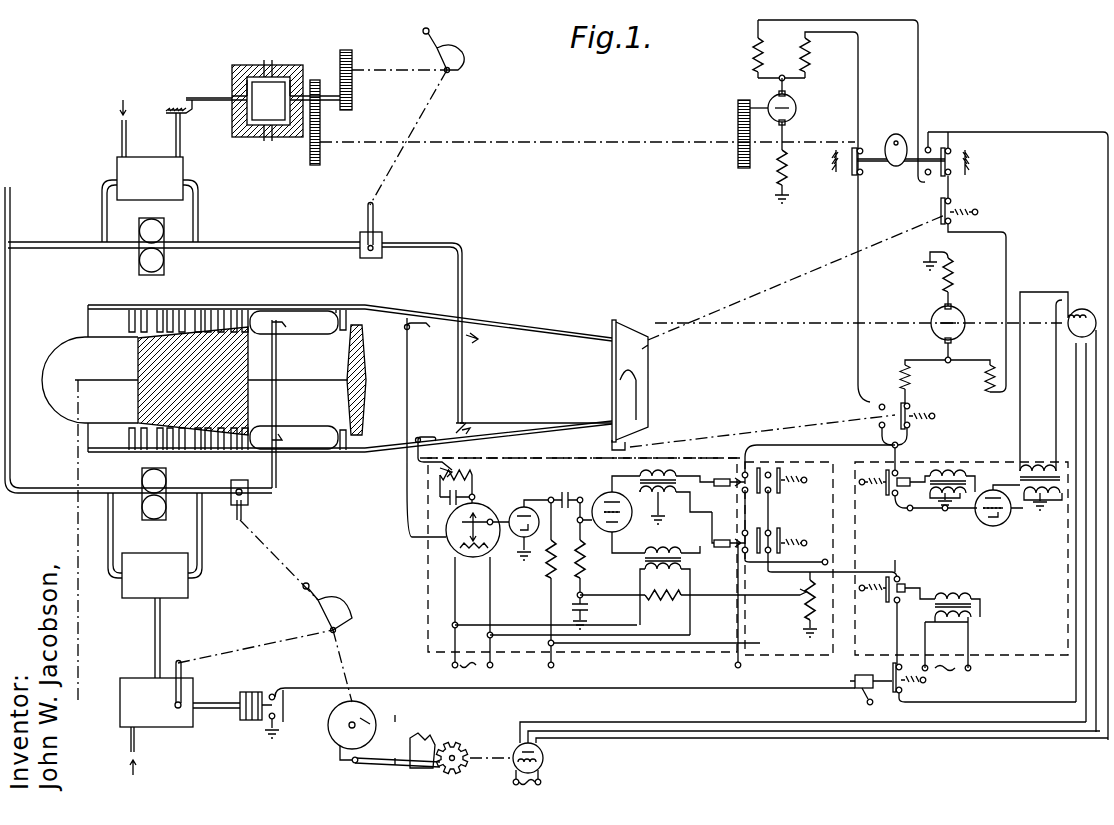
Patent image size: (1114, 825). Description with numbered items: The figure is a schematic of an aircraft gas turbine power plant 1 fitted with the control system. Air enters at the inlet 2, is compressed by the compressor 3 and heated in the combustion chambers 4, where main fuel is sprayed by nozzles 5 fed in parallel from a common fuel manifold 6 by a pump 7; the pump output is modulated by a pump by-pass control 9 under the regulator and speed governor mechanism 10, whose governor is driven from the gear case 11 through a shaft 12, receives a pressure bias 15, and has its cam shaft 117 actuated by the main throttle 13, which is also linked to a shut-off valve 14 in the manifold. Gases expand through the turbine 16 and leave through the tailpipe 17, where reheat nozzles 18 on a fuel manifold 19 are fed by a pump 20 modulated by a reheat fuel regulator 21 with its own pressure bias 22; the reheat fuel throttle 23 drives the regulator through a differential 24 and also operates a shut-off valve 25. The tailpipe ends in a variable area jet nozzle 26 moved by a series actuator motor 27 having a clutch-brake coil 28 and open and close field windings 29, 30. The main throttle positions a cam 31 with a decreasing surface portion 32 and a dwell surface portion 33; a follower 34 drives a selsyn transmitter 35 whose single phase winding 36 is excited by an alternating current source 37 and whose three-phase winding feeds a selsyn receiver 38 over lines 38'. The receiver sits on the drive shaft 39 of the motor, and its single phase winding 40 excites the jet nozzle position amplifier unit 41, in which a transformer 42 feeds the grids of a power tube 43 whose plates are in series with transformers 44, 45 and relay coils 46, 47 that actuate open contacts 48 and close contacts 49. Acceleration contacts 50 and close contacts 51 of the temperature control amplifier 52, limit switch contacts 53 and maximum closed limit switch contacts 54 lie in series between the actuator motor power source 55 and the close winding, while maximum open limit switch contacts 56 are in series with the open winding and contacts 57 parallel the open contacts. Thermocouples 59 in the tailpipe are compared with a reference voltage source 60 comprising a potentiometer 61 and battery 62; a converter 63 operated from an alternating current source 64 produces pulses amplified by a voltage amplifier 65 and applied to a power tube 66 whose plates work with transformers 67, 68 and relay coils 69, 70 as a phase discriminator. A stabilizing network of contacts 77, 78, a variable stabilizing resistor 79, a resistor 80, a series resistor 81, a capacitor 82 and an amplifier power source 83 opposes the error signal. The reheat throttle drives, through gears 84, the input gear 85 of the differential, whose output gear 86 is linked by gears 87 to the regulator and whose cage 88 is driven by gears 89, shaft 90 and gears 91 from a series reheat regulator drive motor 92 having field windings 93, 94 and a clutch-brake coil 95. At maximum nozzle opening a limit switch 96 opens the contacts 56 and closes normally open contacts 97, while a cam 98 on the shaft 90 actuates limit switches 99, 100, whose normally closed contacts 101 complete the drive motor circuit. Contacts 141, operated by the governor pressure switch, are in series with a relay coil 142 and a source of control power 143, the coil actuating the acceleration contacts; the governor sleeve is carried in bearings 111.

The aircraft gas turbine power plant 1 is at (347, 285).
The inlet 2 is at (88, 324).
The compressor 3 is at (242, 312).
The combustion chambers 4 is at (302, 314).
The nozzles 5 is at (282, 316).
The fuel manifold 6 is at (280, 482).
The pump 7 is at (146, 482).
The pump by-pass control 9 is at (152, 558).
The regulator and speed governor mechanism 10 is at (131, 678).
The gear case 11 is at (55, 404).
The shaft 12 is at (78, 620).
The main throttle 13 is at (332, 598).
The shut-off valve 14 is at (232, 480).
The pressure bias 15 is at (128, 746).
The turbine 16 is at (356, 320).
The tailpipe 17 is at (553, 317).
The nozzles 18 is at (471, 342).
The fuel manifold 19 is at (462, 268).
The pump 20 is at (164, 236).
The reheat fuel regulator 21 is at (186, 171).
The pressure bias 22 is at (120, 135).
The reheat fuel throttle 23 is at (456, 46).
The differential 24 is at (276, 39).
The shut-off valve 25 is at (360, 232).
The variable area jet nozzle 26 is at (644, 398).
The series actuator motor 27 is at (964, 316).
The series clutch-brake coil 28 is at (956, 274).
The series field exciting winding 29 is at (900, 370).
The series field exciting winding 30 is at (984, 380).
The cam 31 is at (396, 722).
The decreasing surface portion 32 is at (372, 710).
The dwell surface portion 33 is at (338, 737).
The follower 34 is at (376, 766).
The selsyn transmitter 35 is at (512, 742).
The single phase winding 36 is at (546, 749).
The source of alternating current 37 is at (544, 782).
The selsyn receiver 38 is at (1083, 497).
The lines 38' is at (793, 749).
The drive shaft 39 is at (902, 318).
The single phase winding 40 is at (1065, 307).
The jet nozzle position amplifier unit 41 is at (1006, 453).
The transformer 42 is at (1020, 470).
The power tube 43 is at (1006, 530).
The transformer 44 is at (964, 486).
The transformer 45 is at (970, 616).
The relay coil 46 is at (910, 480).
The relay coil 47 is at (904, 596).
The open contacts 48 is at (902, 473).
The close contacts 49 is at (890, 604).
The acceleration contacts 50 is at (892, 695).
The contacts 51 is at (752, 526).
The temperature control amplifier 52 is at (728, 451).
The limit switch 53 is at (960, 154).
The maximum closed limit switch contacts 54 is at (958, 206).
The source of actuator motor power 55 is at (730, 664).
The maximum open limit switch contacts 56 is at (910, 408).
The contacts 57 is at (742, 478).
The thermocouples 59 is at (436, 312).
The constant reference voltage source 60 is at (508, 493).
The potentiometer 61 is at (462, 470).
The battery 62 is at (442, 504).
The converter 63 is at (476, 556).
The source of alternating current 64 is at (480, 666).
The voltage amplifier 65 is at (514, 512).
The power tube 66 is at (603, 500).
The transformer 67 is at (640, 487).
The transformer 68 is at (684, 566).
The relay coil 69 is at (706, 484).
The relay coil 70 is at (710, 541).
The contacts 77 is at (774, 498).
The contacts 78 is at (778, 552).
The variable stabilizing resistor 79 is at (806, 608).
The resistor 80 is at (667, 598).
The series resistor 81 is at (578, 542).
The capacitor 82 is at (588, 604).
The source of amplifier power 83 is at (560, 664).
The gears 84 is at (354, 86).
The input gear 85 is at (284, 75).
The output gear 86 is at (255, 77).
The gears 87 is at (185, 88).
The cage 88 is at (256, 136).
The gears 89 is at (322, 118).
The shaft 90 is at (586, 140).
The gears 91 is at (736, 116).
The series reheat regulator drive motor 92 is at (794, 106).
The series field exciting winding 93 is at (750, 54).
The series field exciting winding 94 is at (808, 52).
The series clutch-brake coil 95 is at (772, 182).
The limit switch 96 is at (610, 440).
The normally open contacts 97 is at (877, 406).
The cam 98 is at (896, 134).
The limit switch 99 is at (918, 166).
The limit switch 100 is at (872, 164).
The normally closed contacts 101 is at (852, 172).
The bearings 111 is at (805, 728).
The shaft 117 is at (182, 670).
The contacts 141 is at (286, 714).
The relay coil 142 is at (854, 676).
The source of control power 143 is at (866, 704).